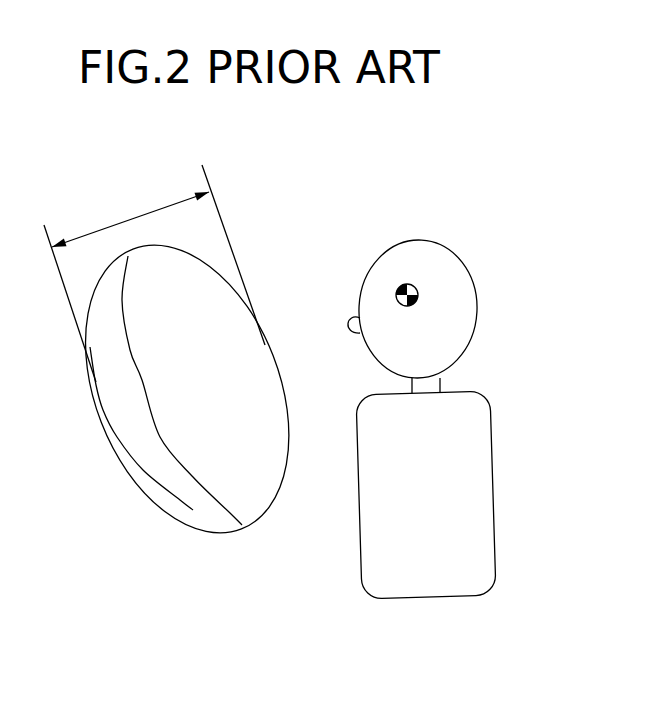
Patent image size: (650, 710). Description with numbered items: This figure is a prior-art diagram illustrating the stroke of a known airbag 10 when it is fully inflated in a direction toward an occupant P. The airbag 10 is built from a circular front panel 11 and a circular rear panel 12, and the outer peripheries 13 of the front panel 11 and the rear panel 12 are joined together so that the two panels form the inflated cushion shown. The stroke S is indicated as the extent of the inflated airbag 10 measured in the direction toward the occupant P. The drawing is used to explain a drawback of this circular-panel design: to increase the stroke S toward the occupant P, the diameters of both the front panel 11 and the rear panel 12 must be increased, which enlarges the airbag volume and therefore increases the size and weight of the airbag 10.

The airbag 10 is at (185, 401).
The front panel 11 is at (267, 478).
The rear panel 12 is at (180, 493).
The outer peripheries 13 is at (228, 512).
The stroke S is at (130, 218).
The occupant P is at (442, 255).